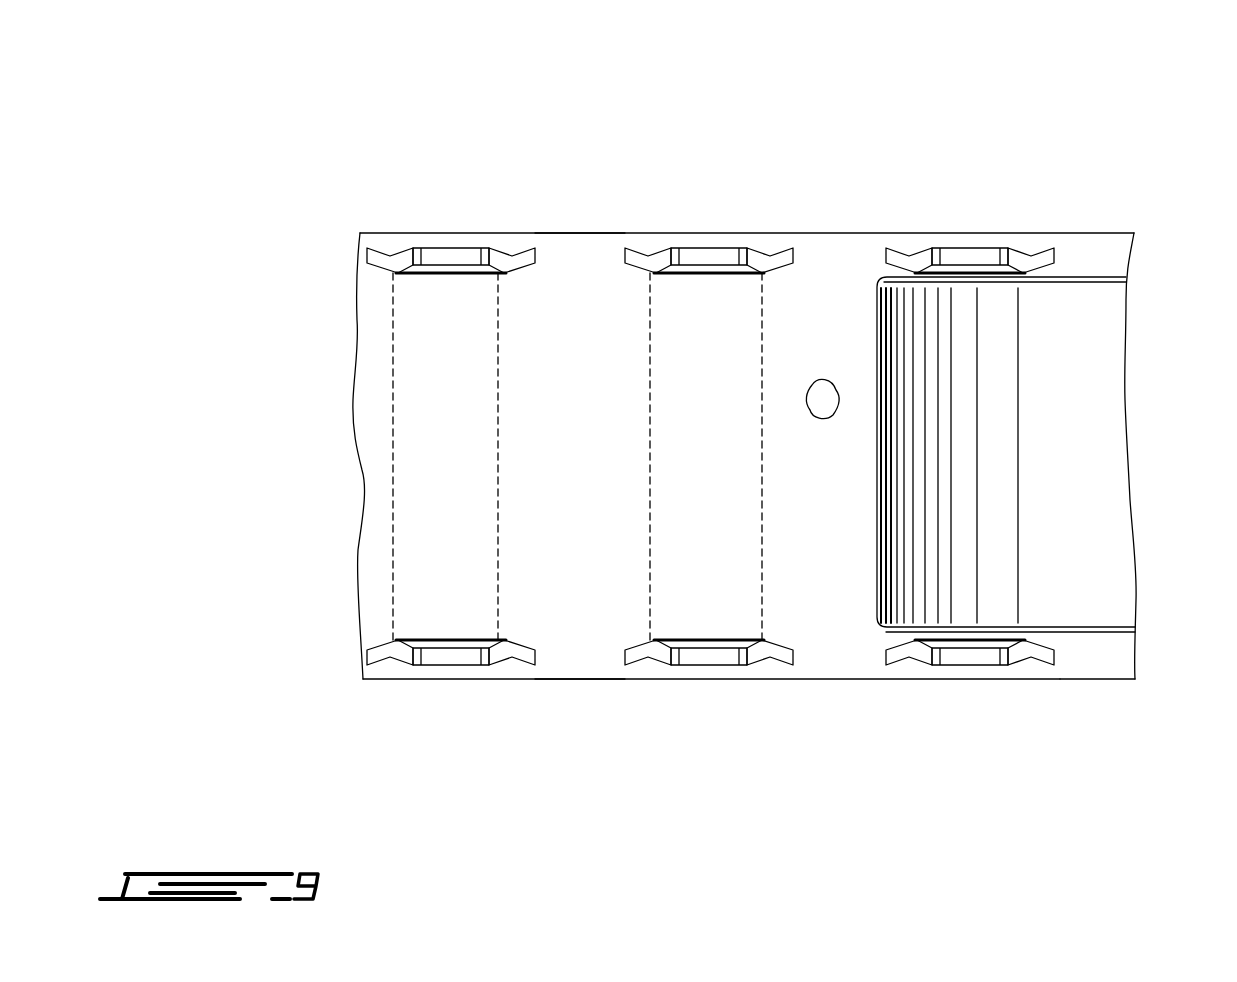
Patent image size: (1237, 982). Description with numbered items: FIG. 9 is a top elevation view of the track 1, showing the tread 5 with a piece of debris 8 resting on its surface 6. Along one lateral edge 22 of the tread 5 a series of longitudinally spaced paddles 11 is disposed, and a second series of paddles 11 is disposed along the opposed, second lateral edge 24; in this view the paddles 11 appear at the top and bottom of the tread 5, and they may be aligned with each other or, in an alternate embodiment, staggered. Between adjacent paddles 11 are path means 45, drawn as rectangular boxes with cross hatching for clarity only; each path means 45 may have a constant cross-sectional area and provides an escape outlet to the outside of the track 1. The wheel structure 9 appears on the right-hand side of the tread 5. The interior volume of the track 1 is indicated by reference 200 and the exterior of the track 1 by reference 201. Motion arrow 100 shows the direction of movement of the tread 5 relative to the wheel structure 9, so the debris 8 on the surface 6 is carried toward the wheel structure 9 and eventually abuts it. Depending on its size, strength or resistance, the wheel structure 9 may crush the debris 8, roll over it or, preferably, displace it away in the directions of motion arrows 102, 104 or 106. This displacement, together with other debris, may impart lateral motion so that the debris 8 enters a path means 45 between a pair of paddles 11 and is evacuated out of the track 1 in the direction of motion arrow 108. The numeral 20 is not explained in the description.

The track 1 is at (1051, 737).
The tread 5 is at (1118, 658).
The surface 6 is at (378, 383).
The debris 8 is at (820, 405).
The wheel structure 9 is at (1103, 437).
The paddles 11 is at (460, 250).
The bottom surface 20 is at (627, 751).
The first lateral edge 22 is at (380, 680).
The second lateral edge 24 is at (372, 233).
The path means 45 is at (572, 243).
The motion arrow 100 is at (996, 40).
The motion arrow 102 is at (823, 378).
The motion arrow 104 is at (823, 425).
The motion arrow 106 is at (787, 406).
The motion arrow 108 is at (815, 233).
The interior volume of track 200 is at (410, 487).
The exterior of track 201 is at (646, 184).